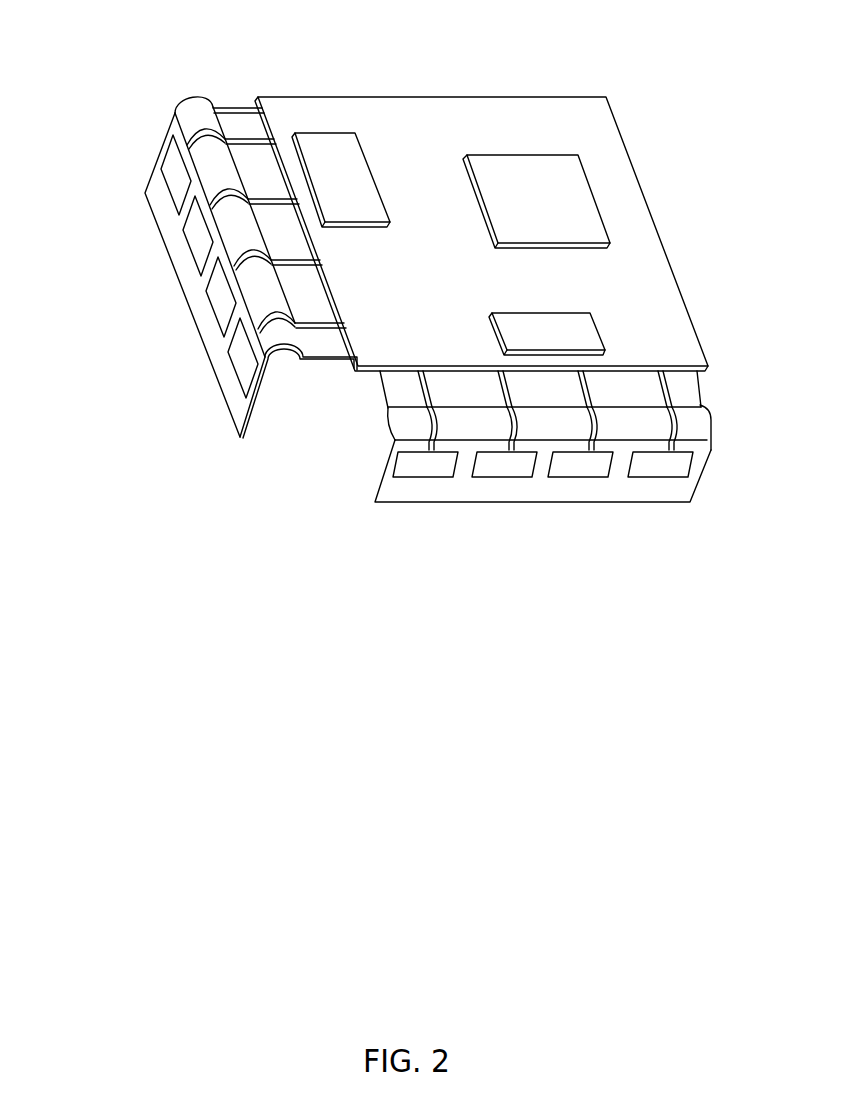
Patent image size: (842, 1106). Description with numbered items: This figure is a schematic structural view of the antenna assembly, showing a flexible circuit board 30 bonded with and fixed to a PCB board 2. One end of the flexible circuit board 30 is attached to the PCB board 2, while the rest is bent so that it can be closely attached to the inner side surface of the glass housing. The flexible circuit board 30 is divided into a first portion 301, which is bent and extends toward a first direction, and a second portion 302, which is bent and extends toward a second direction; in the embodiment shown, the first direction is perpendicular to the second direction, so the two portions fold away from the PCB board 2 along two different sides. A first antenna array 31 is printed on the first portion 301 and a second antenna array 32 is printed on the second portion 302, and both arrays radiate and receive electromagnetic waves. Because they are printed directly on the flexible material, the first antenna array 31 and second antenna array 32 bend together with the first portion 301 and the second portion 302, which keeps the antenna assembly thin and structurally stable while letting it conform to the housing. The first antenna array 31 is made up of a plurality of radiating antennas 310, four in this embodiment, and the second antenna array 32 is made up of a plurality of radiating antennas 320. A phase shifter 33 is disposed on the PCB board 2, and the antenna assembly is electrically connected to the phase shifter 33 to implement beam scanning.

The PCB board 2 is at (633, 255).
The phase shifter 33 is at (338, 173).
The flexible circuit board 30 is at (367, 567).
The first portion 301 is at (228, 382).
The second portion 302 is at (393, 490).
The first antenna array 31 is at (170, 180).
The radiating antennas 310 is at (222, 298).
The second antenna array 32 is at (665, 462).
The radiating antennas 320 is at (585, 463).